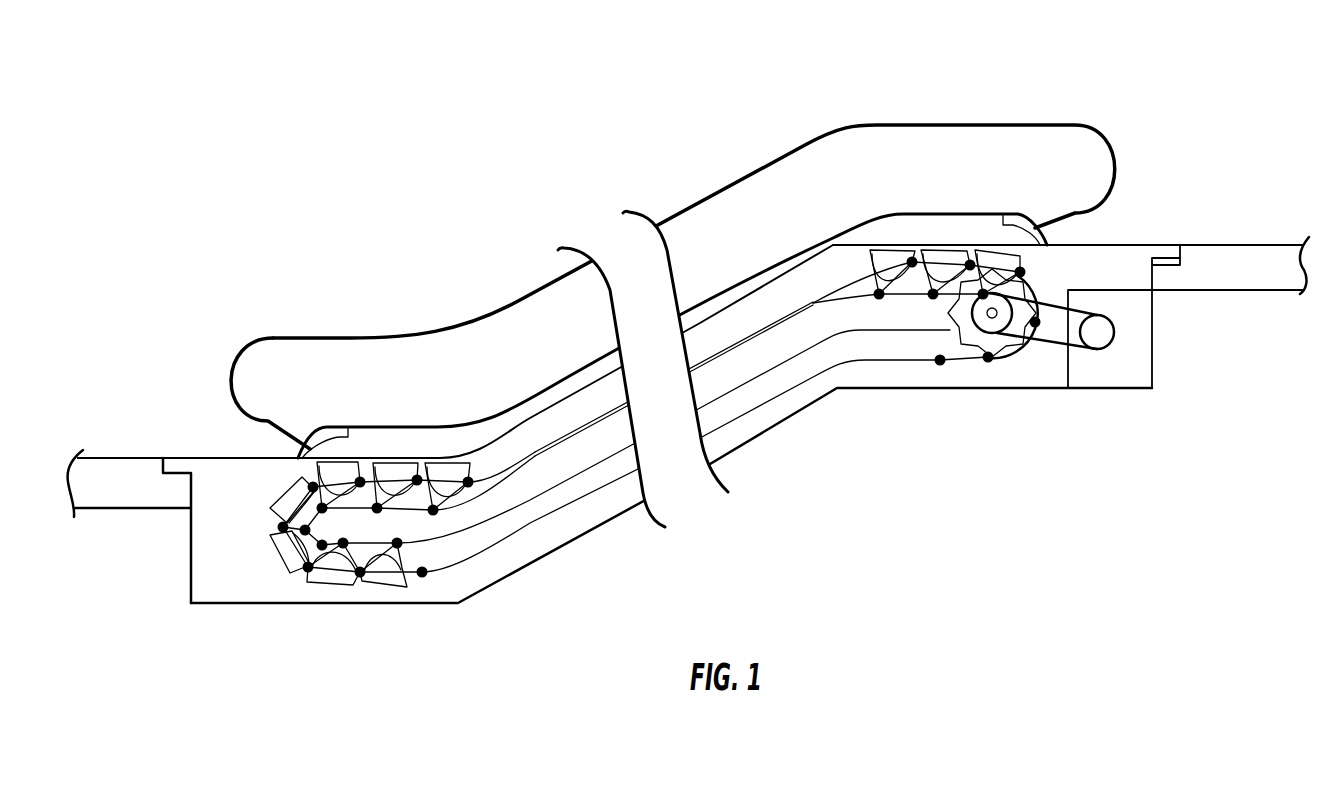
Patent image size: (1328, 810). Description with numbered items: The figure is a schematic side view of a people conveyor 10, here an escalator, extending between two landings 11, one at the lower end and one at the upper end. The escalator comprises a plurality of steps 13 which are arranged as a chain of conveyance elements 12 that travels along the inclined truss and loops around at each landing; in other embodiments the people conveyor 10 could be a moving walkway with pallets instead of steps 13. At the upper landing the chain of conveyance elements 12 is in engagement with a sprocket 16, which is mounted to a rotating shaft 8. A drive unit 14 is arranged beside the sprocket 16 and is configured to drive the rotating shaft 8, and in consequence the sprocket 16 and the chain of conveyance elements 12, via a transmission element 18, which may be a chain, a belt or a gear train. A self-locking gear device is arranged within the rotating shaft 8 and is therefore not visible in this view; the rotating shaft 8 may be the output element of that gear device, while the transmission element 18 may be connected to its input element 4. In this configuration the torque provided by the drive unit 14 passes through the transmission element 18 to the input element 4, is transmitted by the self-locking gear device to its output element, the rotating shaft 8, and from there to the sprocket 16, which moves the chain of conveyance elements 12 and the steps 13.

The people conveyor 10 is at (717, 118).
The landing 11 is at (150, 410).
The chain of conveyance elements 12 is at (963, 235).
The step 13 is at (260, 555).
The input element 4 is at (1027, 287).
The rotating shaft 8 is at (983, 340).
The drive unit 14 is at (1127, 298).
The sprocket 16 is at (1005, 362).
The transmission element 18 is at (1072, 350).